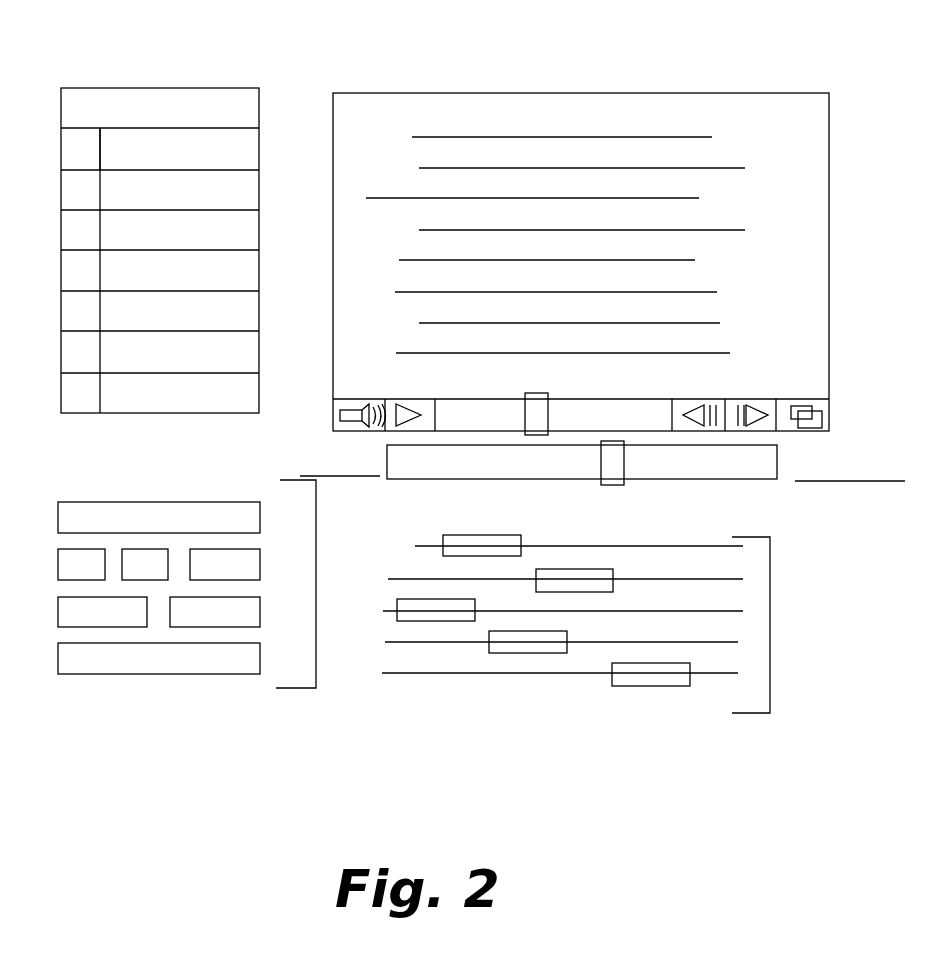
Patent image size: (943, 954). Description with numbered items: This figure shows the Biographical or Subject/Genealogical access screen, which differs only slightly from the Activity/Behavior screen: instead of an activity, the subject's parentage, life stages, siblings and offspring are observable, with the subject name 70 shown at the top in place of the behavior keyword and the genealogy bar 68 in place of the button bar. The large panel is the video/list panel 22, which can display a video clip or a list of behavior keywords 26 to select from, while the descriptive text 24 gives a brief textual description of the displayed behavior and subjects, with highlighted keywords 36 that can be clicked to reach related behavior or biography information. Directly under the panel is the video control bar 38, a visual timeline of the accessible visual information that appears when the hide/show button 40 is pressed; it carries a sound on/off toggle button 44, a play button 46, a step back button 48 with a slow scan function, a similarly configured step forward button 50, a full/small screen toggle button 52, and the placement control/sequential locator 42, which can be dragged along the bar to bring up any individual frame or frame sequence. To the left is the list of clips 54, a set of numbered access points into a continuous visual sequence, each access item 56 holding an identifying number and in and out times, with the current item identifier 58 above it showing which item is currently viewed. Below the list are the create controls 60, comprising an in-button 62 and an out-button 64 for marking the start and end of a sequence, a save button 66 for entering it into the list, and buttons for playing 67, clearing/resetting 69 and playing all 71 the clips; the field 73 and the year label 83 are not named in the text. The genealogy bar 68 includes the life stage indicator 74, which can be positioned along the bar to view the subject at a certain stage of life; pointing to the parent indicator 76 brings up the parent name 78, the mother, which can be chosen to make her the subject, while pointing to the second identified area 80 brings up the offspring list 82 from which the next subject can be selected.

The video/list panel 22 is at (722, 140).
The descriptive text 24 is at (772, 628).
The list of behavior keywords 26 is at (829, 168).
The highlighted keywords 36 is at (489, 556).
The video control bar 38 is at (483, 413).
The hide/show button 40 is at (92, 25).
The placement control/sequential locator 42 is at (530, 437).
The sound on/off toggle button 44 is at (358, 403).
The play button 46 is at (413, 405).
The step back button 48 is at (691, 402).
The step forward button 50 is at (752, 403).
The full/small screen toggle button 52 is at (797, 401).
The list of clips 54 is at (60, 226).
The access item 56 is at (238, 153).
The current item identifier 58 is at (218, 105).
The create controls 60 is at (318, 600).
The in-button 62 is at (58, 558).
The out-button 64 is at (125, 552).
The save button 66 is at (58, 610).
The play button for created clip 67 is at (248, 565).
The genealogy bar 68 is at (706, 470).
The clearing/resetting button 69 is at (248, 614).
The subject name 70 is at (620, 52).
The play all button 71 is at (215, 664).
The display field 73 is at (241, 513).
The life stage indicator 74 is at (622, 487).
The parent indicator 76 is at (330, 447).
The parent name 78 is at (355, 479).
The second identified area 80 is at (845, 450).
The offspring list 82 is at (822, 483).
The YEAR label 83 is at (405, 510).